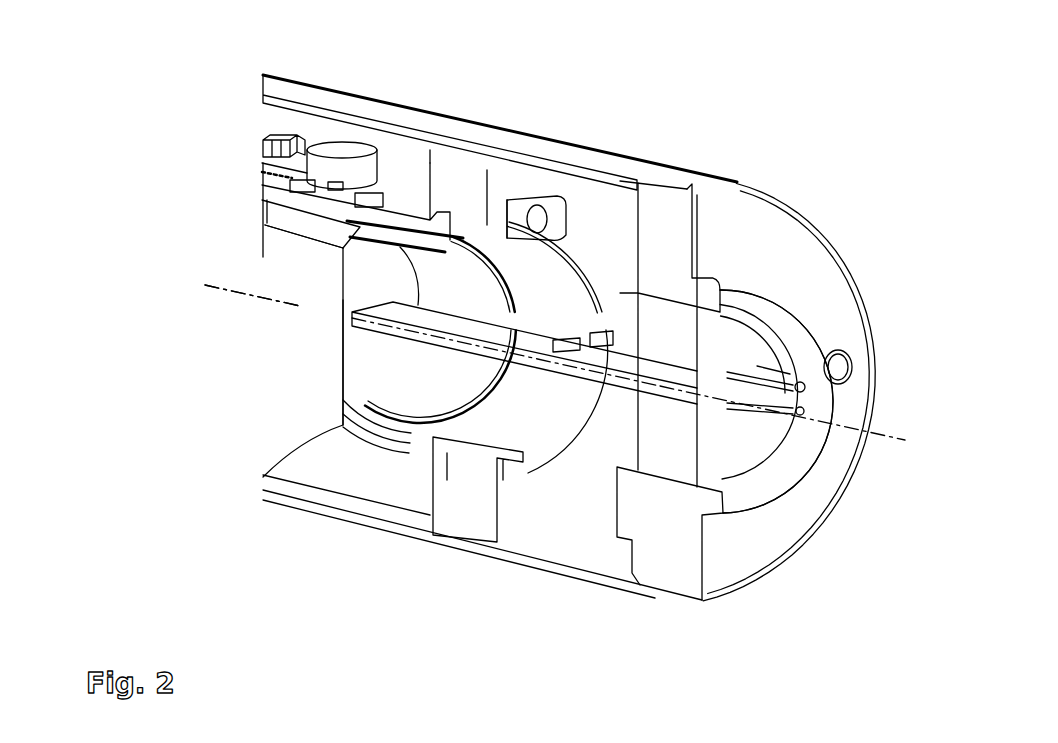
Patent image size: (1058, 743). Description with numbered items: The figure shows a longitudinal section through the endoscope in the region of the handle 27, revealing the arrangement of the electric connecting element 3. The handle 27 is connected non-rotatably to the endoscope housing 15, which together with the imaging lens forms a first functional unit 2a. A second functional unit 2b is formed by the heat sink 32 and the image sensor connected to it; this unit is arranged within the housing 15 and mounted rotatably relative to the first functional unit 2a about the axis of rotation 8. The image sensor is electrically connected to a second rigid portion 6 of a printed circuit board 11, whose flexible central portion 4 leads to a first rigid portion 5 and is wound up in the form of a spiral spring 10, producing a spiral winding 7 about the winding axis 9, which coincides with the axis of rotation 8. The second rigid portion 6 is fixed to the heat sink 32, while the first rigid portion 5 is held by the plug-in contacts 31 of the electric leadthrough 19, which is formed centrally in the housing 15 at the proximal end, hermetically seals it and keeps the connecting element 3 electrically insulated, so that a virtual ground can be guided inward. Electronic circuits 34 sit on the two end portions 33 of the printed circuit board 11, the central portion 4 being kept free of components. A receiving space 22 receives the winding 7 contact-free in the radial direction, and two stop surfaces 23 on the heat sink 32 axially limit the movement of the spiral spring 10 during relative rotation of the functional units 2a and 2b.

The first functional unit 2a is at (688, 578).
The second functional unit 2b is at (270, 433).
The connecting element 3 is at (388, 183).
The flexible central portion 4 is at (462, 297).
The first rigid portion 5 is at (575, 378).
The second rigid portion 6 is at (303, 203).
The spiral winding 7 is at (387, 380).
The axis of rotation 8 is at (233, 290).
The winding axis 9 is at (260, 298).
The spiral spring 10 is at (390, 412).
The printed circuit board 11 is at (420, 183).
The endoscope housing 15 is at (687, 180).
The electric leadthrough 19 is at (663, 375).
The receiving space 22 is at (337, 427).
The stop surfaces 23 is at (358, 289).
The handle 27 is at (518, 150).
The plug-in contacts 31 is at (787, 383).
The heat sink 32 is at (287, 410).
The end portions 33 is at (278, 182).
The electronic circuits 34 is at (262, 147).